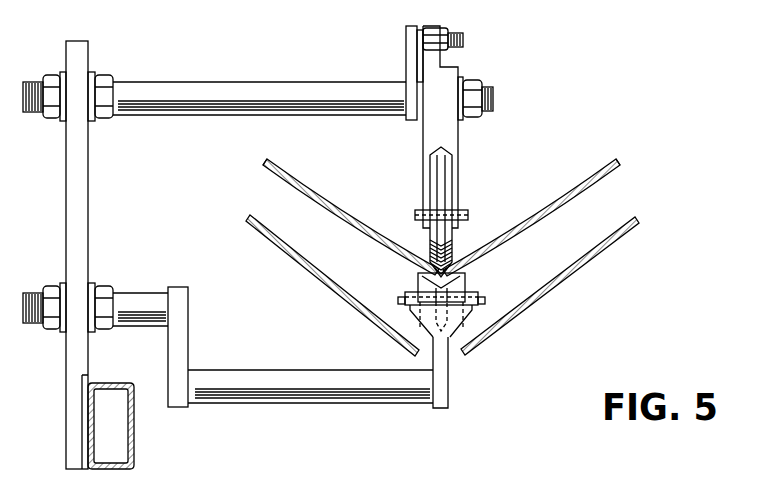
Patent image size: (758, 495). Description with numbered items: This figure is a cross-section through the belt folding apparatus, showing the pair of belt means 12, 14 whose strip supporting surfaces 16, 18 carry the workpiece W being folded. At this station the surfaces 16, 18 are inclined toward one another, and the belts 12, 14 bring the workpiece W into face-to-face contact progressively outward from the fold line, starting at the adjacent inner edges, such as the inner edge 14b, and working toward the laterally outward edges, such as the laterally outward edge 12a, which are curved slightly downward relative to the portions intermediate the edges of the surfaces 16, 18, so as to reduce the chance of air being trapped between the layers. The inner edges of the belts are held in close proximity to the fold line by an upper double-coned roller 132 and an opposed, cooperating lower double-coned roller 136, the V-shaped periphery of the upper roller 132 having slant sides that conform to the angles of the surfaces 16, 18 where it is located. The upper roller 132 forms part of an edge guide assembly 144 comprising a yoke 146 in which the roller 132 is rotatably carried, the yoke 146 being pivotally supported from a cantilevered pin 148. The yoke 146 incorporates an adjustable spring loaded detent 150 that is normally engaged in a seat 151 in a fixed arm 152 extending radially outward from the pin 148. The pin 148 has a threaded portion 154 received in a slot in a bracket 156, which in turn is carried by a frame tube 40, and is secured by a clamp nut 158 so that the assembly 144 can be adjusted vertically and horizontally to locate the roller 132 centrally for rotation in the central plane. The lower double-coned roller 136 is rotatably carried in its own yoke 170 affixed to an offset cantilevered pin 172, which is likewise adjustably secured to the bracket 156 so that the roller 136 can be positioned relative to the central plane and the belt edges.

The belt means 12 is at (602, 240).
The laterally outward edge 12a is at (618, 163).
The belt means 14 is at (292, 250).
The inner edge 14b is at (264, 160).
The strip supporting surface 16 is at (572, 182).
The strip supporting surface 18 is at (302, 176).
The frame tube 40 is at (134, 456).
The upper double-coned roller 132 is at (447, 172).
The lower double-coned roller 136 is at (462, 287).
The edge guide assembly 144 is at (473, 67).
The yoke 146 is at (460, 137).
The cantilevered pin 148 is at (242, 82).
The adjustable spring loaded detent 150 is at (423, 35).
The seat 151 is at (420, 40).
The fixed arm 152 is at (406, 31).
The threaded portion 154 is at (110, 83).
The bracket 156 is at (88, 220).
The clamp nut 158 is at (48, 122).
The yoke 170 is at (449, 362).
The offset cantilevered pin 172 is at (337, 370).
The workpiece W is at (382, 232).